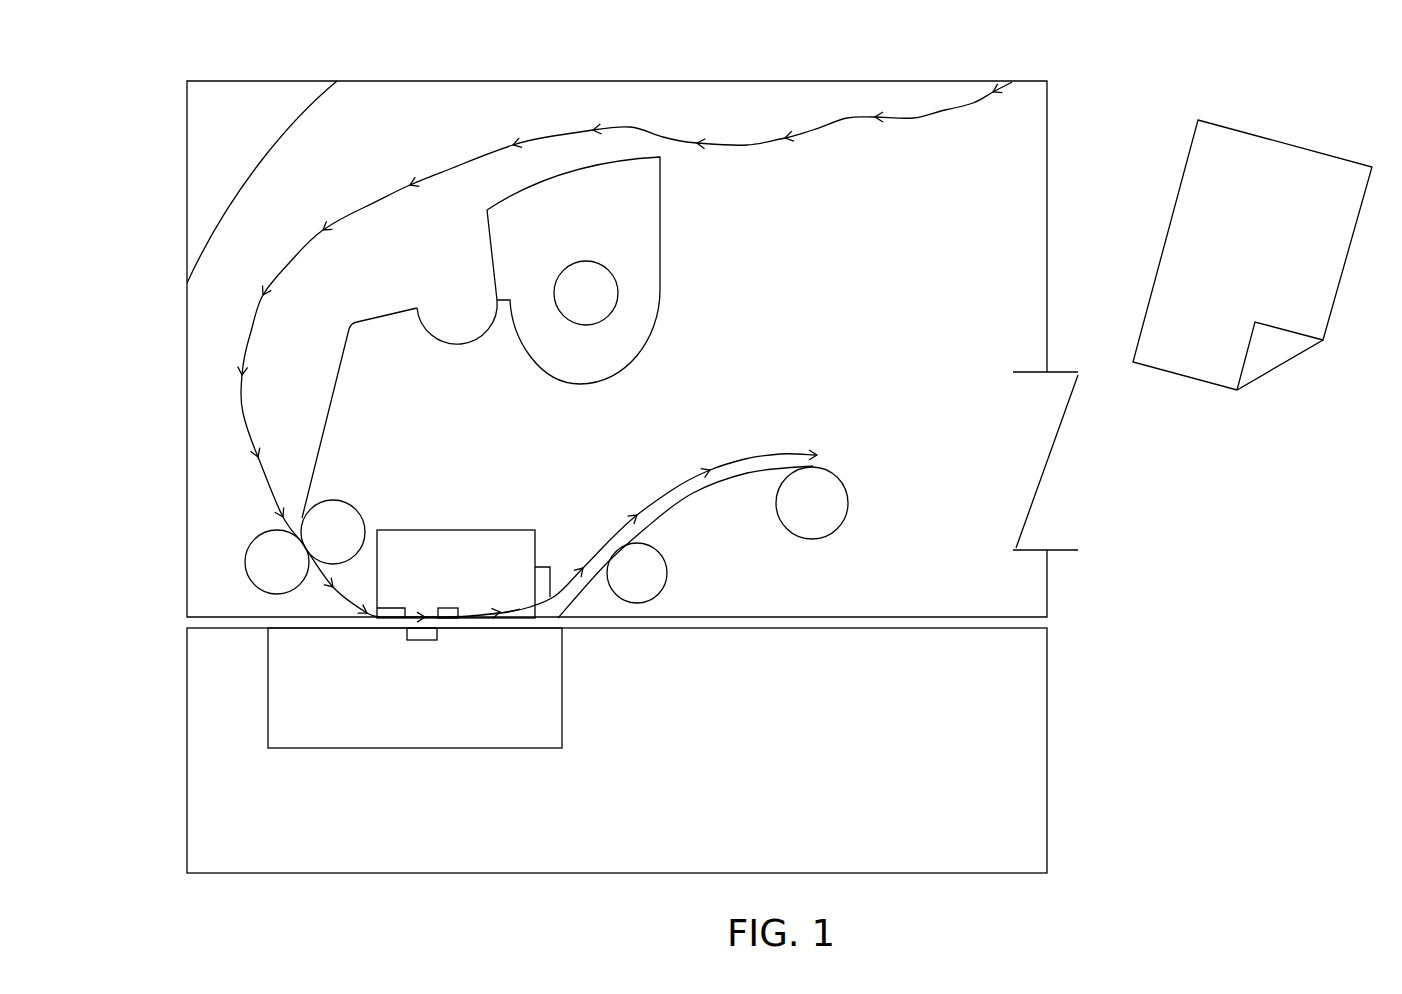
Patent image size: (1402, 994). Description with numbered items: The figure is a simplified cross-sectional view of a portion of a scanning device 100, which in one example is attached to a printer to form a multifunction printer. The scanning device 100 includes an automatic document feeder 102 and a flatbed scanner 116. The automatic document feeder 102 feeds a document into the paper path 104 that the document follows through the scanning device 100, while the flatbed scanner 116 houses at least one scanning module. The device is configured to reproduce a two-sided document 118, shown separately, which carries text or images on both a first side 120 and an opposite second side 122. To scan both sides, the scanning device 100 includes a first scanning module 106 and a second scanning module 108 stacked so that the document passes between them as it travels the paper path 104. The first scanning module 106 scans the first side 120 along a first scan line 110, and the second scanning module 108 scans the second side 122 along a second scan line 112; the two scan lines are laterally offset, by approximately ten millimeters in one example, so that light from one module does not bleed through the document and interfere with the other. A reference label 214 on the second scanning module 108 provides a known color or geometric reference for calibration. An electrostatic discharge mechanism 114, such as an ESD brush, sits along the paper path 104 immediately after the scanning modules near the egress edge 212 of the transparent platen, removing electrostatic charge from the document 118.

The scanning device 100 is at (151, 69).
The automatic document feeder 102 is at (1030, 81).
The paper path 104 is at (910, 117).
The first scanning module 106 is at (562, 718).
The second scanning module 108 is at (513, 530).
The first scan line 110 is at (420, 640).
The second scan line 112 is at (457, 608).
The electrostatic discharge mechanism 114 is at (552, 565).
The flatbed scanner 116 is at (1047, 758).
The two-sided document 118 is at (1252, 227).
The first side 120 is at (1197, 180).
The second side 122 is at (1278, 357).
The egress edge 212 is at (508, 620).
The reference label 214 is at (398, 608).